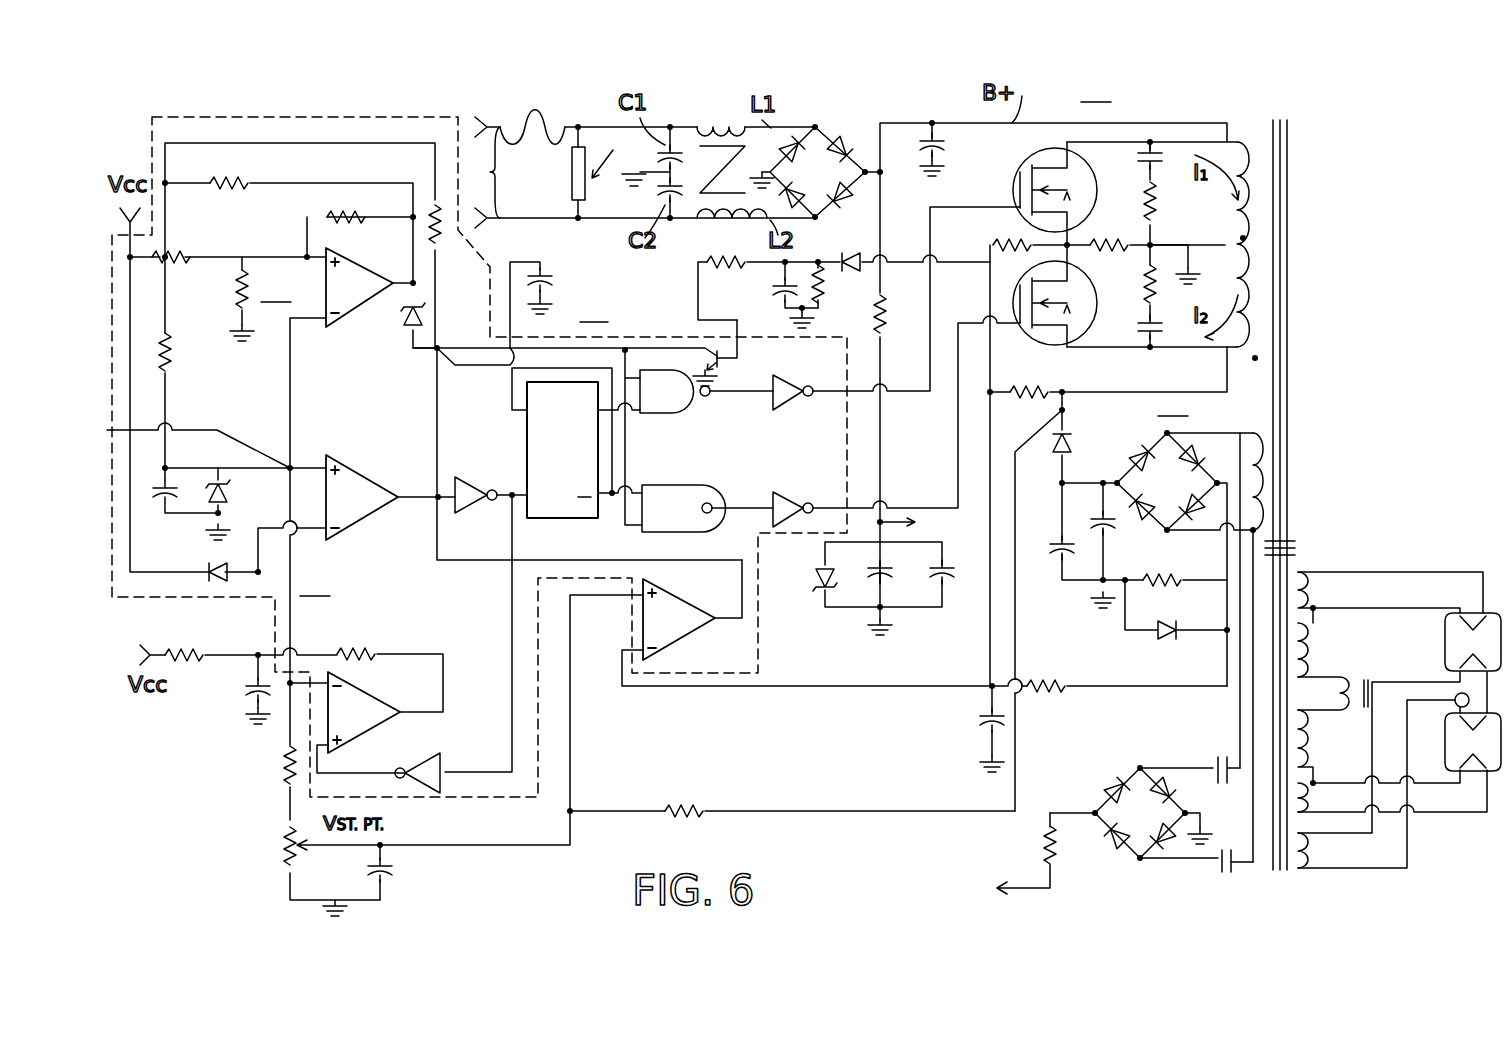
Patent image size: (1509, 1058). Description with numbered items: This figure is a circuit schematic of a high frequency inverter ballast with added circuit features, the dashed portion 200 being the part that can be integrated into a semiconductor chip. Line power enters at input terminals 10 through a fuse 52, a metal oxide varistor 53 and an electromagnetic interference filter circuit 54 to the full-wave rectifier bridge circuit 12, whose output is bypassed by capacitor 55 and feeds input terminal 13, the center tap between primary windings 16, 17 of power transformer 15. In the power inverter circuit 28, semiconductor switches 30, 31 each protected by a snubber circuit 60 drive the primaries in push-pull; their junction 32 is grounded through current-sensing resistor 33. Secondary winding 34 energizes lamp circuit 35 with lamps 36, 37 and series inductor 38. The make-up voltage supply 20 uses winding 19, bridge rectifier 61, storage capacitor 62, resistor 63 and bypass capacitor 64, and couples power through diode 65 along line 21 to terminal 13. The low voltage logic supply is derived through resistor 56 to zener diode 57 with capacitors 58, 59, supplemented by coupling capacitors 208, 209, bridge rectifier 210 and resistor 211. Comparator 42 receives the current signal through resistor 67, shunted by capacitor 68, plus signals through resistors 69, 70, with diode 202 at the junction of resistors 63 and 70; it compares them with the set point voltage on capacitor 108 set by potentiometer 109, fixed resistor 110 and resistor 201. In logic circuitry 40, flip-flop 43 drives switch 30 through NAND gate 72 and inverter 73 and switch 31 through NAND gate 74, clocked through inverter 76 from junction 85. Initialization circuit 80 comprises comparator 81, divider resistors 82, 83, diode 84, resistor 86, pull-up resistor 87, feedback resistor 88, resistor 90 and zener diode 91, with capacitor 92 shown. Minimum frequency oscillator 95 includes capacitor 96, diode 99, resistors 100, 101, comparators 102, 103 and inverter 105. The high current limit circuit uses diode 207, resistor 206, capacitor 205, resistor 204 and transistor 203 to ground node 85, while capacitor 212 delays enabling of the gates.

The input terminals 10 is at (481, 172).
The full-wave rectifier bridge circuit 12 is at (843, 123).
The input terminal 13 is at (1212, 246).
The power transformer 15 is at (1300, 212).
The second primary winding 16 is at (1240, 347).
The first primary winding 17 is at (1240, 145).
The winding 19 is at (1240, 440).
The make-up voltage supply 20 is at (1173, 404).
The line 21 is at (1100, 392).
The power inverter circuit 28 is at (1096, 90).
The first semiconductor switch 30 is at (1038, 152).
The second semiconductor switch 31 is at (1035, 340).
The junction 32 is at (1072, 250).
The current-sensing resistor 33 is at (1112, 244).
The secondary winding 34 is at (1308, 568).
The lamp circuit 35 is at (1371, 652).
The gaseous discharge lamp 36 is at (1450, 648).
The second lamp 37 is at (1452, 742).
The inductor 38 is at (1354, 730).
The logic circuitry 40 is at (595, 310).
The comparator 42 is at (700, 622).
The flip-flop circuit 43 is at (525, 430).
The fuse 52 is at (540, 127).
The metal oxide varistor over-voltage protection device 53 is at (601, 172).
The electromagnetic interference filter circuit 54 is at (714, 174).
The high frequency bypass capacitor 55 is at (941, 148).
The resistor 56 is at (878, 312).
The zener diode 57 is at (817, 590).
The filter capacitor 58 is at (886, 580).
The high frequency bypass capacitor 59 is at (948, 582).
The snubber circuit 60 is at (1188, 309).
The second bridge rectifier circuit 61 is at (1183, 494).
The storage capacitor 62 is at (1112, 530).
The resistor 63 is at (1170, 588).
The high frequency by-pass capacitor 64 is at (1060, 538).
The diode 65 is at (1072, 440).
The resistor 67 is at (1008, 246).
The capacitor 68 is at (980, 712).
The resistor 69 is at (1030, 395).
The resistor 70 is at (1038, 680).
The NAND gate 72 is at (690, 405).
The inverter 73 is at (788, 385).
The NAND gate 74 is at (690, 485).
The inverter 76 is at (465, 480).
The initialization circuit 80 is at (276, 290).
The comparator 81 is at (350, 322).
The resistor 82 is at (205, 256).
The resistor 83 is at (240, 298).
The diode 84 is at (408, 333).
The junction 85 is at (440, 350).
The resistor 86 is at (451, 276).
The resistor 87 is at (258, 182).
The resistor 88 is at (355, 217).
The resistor 90 is at (170, 348).
The zener diode 91 is at (230, 487).
The capacitor 92 is at (166, 505).
The minimum frequency oscillator 95 is at (315, 584).
The capacitor 96 is at (246, 690).
The diode 99 is at (212, 565).
The resistor 100 is at (195, 669).
The resistor 101 is at (388, 650).
The comparator circuit 102 is at (380, 690).
The comparator circuit 103 is at (372, 520).
The inverter 105 is at (425, 760).
The capacitor 108 is at (392, 870).
The potentiometer 109 is at (283, 857).
The fixed resistor 110 is at (285, 772).
The portion 200 is at (343, 117).
The resistor 201 is at (725, 818).
The diode 202 is at (1160, 638).
The transistor 203 is at (722, 360).
The resistor 204 is at (735, 280).
The capacitor 205 is at (781, 295).
The resistor 206 is at (822, 285).
The diode 207 is at (858, 240).
The high frequency coupling capacitor 208 is at (1218, 757).
The high frequency coupling capacitor 209 is at (1228, 872).
The third bridge rectifier circuit 210 is at (1165, 826).
The resistor 211 is at (1042, 840).
The capacitor 212 is at (548, 278).